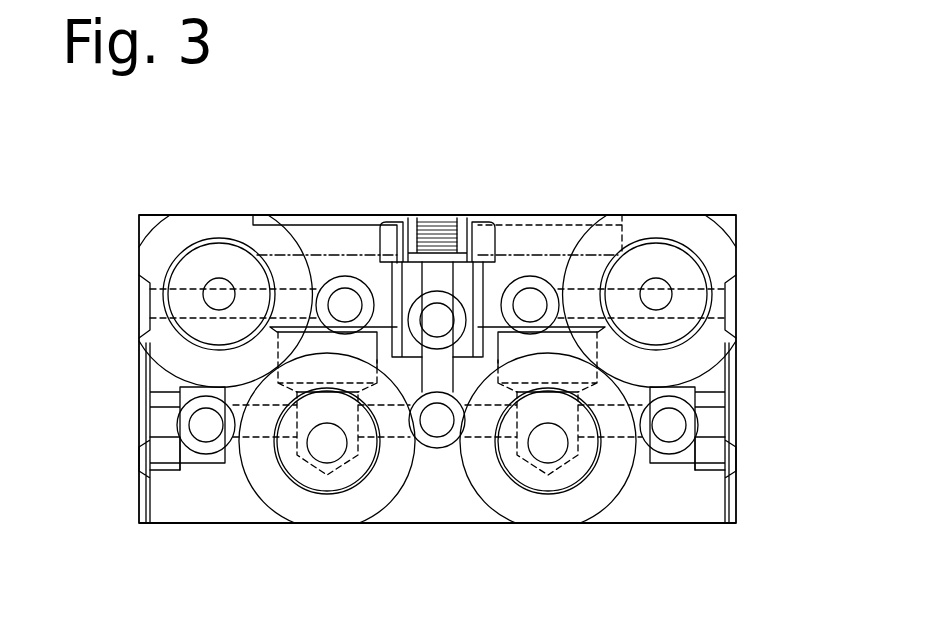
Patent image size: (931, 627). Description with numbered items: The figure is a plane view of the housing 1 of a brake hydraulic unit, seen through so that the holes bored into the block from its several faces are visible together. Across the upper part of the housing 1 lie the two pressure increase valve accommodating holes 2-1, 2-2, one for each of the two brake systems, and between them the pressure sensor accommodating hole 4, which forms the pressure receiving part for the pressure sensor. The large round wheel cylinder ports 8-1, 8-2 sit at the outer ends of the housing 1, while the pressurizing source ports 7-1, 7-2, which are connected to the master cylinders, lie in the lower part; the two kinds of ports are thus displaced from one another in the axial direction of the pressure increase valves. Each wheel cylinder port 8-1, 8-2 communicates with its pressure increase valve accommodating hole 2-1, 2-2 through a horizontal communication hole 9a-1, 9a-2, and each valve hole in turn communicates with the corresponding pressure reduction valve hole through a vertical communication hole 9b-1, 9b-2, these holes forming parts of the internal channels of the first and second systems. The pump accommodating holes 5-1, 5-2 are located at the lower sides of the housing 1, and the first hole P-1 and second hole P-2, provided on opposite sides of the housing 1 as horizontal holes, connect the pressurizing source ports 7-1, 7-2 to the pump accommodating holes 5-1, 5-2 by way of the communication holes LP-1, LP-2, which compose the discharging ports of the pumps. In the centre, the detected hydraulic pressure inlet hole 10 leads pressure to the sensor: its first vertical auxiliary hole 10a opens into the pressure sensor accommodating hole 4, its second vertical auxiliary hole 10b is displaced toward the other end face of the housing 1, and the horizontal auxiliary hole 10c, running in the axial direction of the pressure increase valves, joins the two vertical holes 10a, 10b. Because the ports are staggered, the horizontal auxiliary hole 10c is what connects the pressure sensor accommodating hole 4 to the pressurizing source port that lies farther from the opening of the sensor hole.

The housing 1 is at (722, 513).
The pressure increase valve accommodating hole 2-1 is at (545, 260).
The pressure increase valve accommodating hole 2-2 is at (330, 260).
The pressure sensor accommodating hole 4 is at (393, 253).
The pump accommodating hole 5-1 is at (713, 458).
The pump accommodating hole 5-2 is at (160, 462).
The pressurizing source port 7-1 is at (537, 513).
The pressurizing source port 7-2 is at (327, 515).
The wheel cylinder port 8-1 is at (697, 232).
The wheel cylinder port 8-2 is at (173, 235).
The horizontal communication hole 9a-1 is at (697, 288).
The horizontal communication hole 9a-2 is at (178, 288).
The vertical communication hole 9b-1 is at (548, 298).
The vertical communication hole 9b-2 is at (327, 298).
The detected hydraulic pressure inlet hole 10 is at (460, 266).
The first vertical auxiliary hole 10a is at (435, 312).
The second vertical auxiliary hole 10b is at (430, 410).
The horizontal auxiliary hole 10c is at (443, 368).
The first hole P-1 is at (613, 430).
The second hole P-2 is at (262, 427).
The communication hole LP-1 is at (670, 422).
The communication hole LP-2 is at (210, 420).